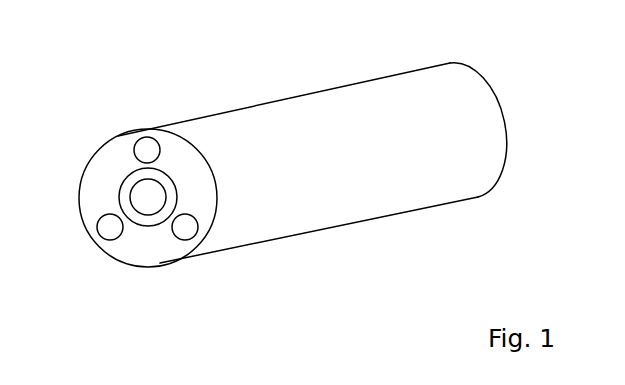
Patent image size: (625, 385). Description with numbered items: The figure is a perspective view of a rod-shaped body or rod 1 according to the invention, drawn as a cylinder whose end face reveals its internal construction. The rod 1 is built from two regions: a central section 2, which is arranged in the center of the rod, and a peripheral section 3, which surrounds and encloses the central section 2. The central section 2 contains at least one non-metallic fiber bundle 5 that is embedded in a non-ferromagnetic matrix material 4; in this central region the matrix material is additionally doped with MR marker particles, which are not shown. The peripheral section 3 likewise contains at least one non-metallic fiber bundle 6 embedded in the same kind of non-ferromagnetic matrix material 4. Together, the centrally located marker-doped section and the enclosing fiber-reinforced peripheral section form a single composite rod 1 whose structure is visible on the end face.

The rod-shaped body 1 is at (405, 153).
The central section 2 is at (162, 177).
The peripheral section 3 is at (137, 248).
The non-ferromagnetic matrix material 4 is at (133, 180).
The non-metallic fiber bundle 5 is at (148, 207).
The non-metallic fiber bundle 6 is at (108, 227).